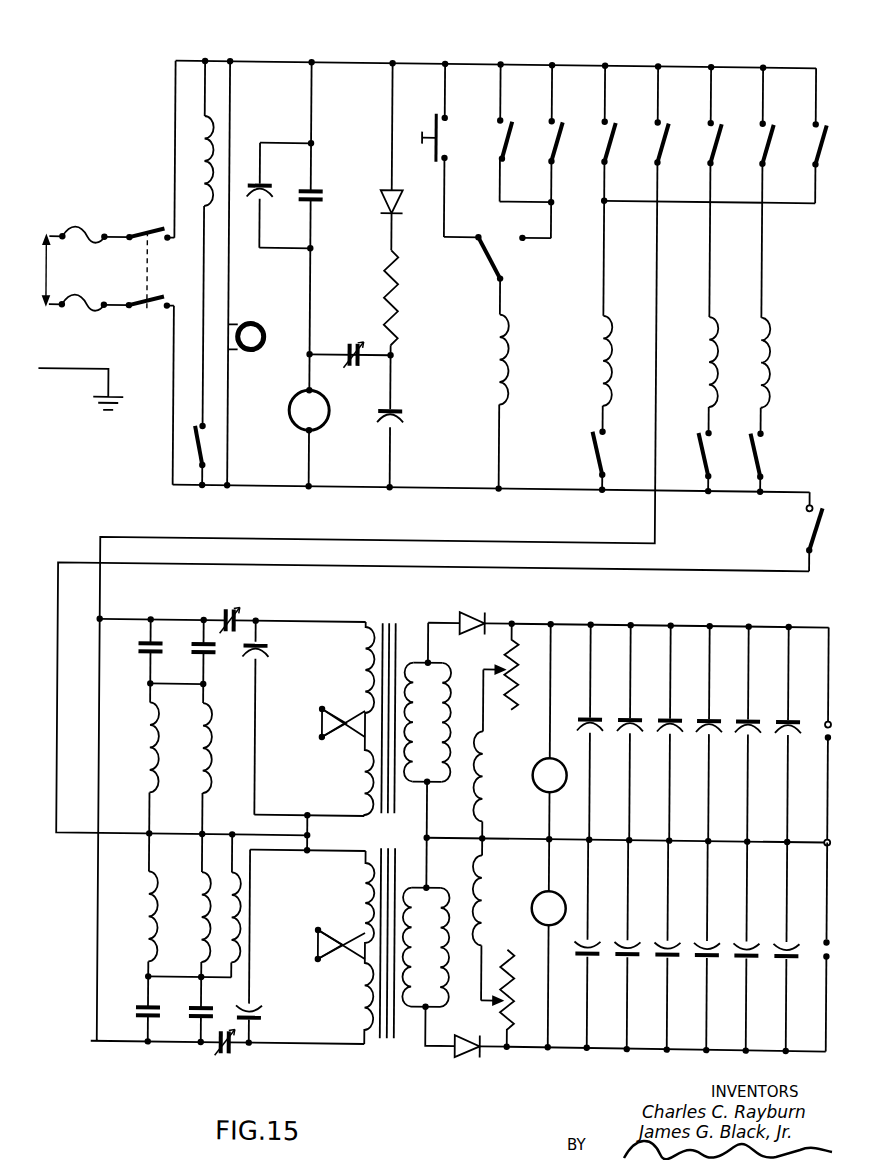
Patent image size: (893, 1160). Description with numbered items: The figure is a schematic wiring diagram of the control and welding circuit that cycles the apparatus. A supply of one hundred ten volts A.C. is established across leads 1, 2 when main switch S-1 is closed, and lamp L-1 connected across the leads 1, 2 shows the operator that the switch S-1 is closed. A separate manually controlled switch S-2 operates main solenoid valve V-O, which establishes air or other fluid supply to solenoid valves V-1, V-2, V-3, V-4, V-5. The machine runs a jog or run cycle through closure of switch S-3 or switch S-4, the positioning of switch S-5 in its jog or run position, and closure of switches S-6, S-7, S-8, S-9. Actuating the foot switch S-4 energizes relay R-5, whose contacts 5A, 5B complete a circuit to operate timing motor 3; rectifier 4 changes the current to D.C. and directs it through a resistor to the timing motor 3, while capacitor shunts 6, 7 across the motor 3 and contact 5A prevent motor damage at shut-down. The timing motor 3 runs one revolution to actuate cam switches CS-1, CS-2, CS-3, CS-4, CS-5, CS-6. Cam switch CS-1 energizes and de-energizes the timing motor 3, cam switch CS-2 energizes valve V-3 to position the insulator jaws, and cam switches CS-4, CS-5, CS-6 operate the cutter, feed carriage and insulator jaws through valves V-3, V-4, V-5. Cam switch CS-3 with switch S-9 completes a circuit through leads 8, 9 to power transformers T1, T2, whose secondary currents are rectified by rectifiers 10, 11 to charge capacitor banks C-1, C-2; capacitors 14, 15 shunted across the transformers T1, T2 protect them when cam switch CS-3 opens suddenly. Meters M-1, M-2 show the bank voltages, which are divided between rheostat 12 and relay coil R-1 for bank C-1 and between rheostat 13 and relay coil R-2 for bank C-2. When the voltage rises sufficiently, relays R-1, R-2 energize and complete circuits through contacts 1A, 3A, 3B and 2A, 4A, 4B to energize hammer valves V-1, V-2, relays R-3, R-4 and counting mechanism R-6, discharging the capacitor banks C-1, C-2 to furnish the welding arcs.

The lead 1 is at (269, 65).
The lead 2 is at (171, 391).
The timing motor 3 is at (286, 424).
The rectifier 4 is at (376, 203).
The contact of relay R-5 5A is at (315, 191).
The contact of relay R-5 5B is at (348, 345).
The capacitor shunt 6 is at (397, 414).
The capacitor shunt 7 is at (254, 186).
The lead 8 is at (56, 679).
The lead 9 is at (99, 694).
The rectifier 10 is at (470, 613).
The rectifier 11 is at (464, 1058).
The rheostat 12 is at (510, 673).
The rheostat 13 is at (504, 997).
The capacitor 14 is at (270, 650).
The capacitor 15 is at (265, 1016).
The contact 1A is at (139, 648).
The contact 2A is at (139, 1011).
The contact 3A is at (194, 648).
The contact 4A is at (194, 1011).
The contact 3B is at (226, 612).
The contact 4B is at (220, 1058).
The main switch S-1 is at (109, 279).
The manually controlled switch S-2 is at (197, 446).
The jog switch S-3 is at (431, 124).
The run switch S-4 is at (496, 118).
The jog/run selector switch S-5 is at (502, 262).
The switch S-6 is at (603, 446).
The switch S-7 is at (708, 446).
The switch S-8 is at (762, 446).
The switch S-9 is at (806, 524).
The cam switch CS-1 is at (545, 122).
The cam switch CS-2 is at (598, 122).
The cam switch CS-3 is at (651, 122).
The cam switch CS-4 is at (704, 122).
The cam switch CS-5 is at (756, 122).
The cam switch CS-6 is at (809, 122).
The main solenoid valve V-O is at (196, 161).
The solenoid valve V-1 is at (150, 737).
The solenoid valve V-2 is at (147, 910).
The solenoid valve V-3 is at (597, 362).
The solenoid valve V-4 is at (703, 362).
The solenoid valve V-5 is at (757, 362).
The relay coil R-1 is at (476, 762).
The relay coil R-2 is at (480, 905).
The relay R-3 is at (203, 740).
The relay R-4 is at (201, 909).
The relay R-5 is at (494, 357).
The counting mechanism R-6 is at (243, 917).
The lamp L-1 is at (250, 356).
The transformer T1 is at (402, 641).
The transformer T2 is at (401, 1038).
The meter M-1 is at (550, 731).
The meter M-2 is at (548, 943).
The capacitor bank C-1 is at (797, 613).
The capacitor bank C-2 is at (793, 1053).